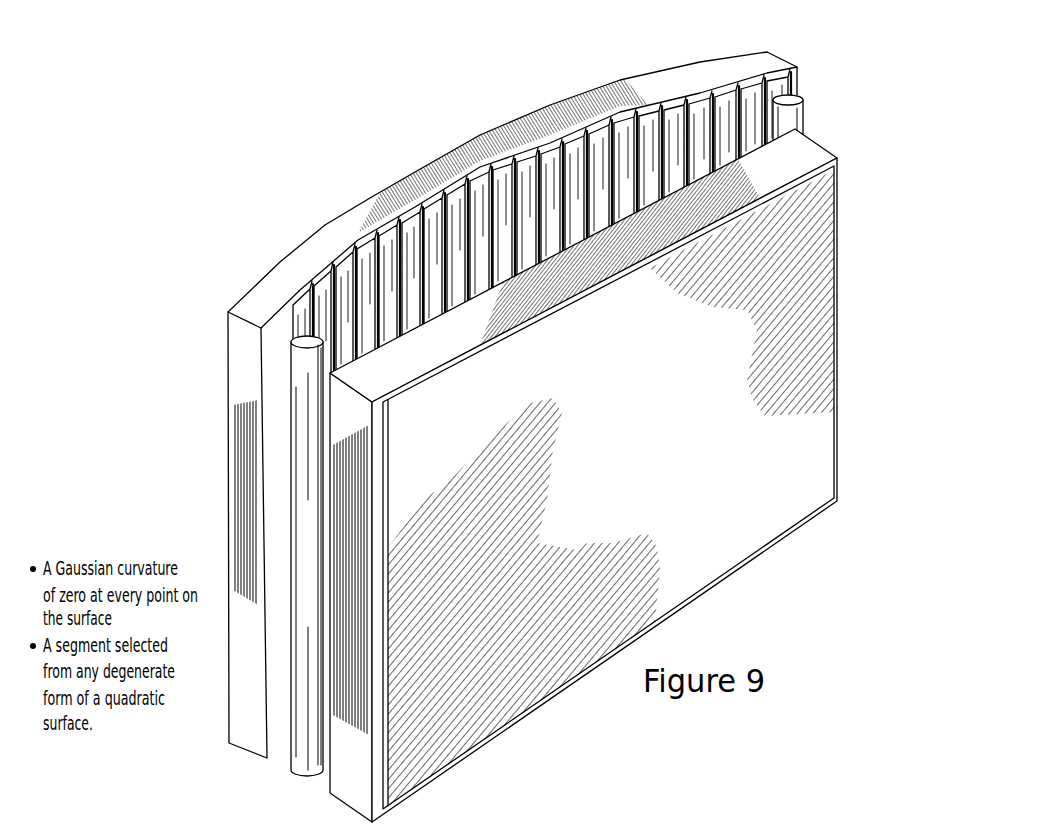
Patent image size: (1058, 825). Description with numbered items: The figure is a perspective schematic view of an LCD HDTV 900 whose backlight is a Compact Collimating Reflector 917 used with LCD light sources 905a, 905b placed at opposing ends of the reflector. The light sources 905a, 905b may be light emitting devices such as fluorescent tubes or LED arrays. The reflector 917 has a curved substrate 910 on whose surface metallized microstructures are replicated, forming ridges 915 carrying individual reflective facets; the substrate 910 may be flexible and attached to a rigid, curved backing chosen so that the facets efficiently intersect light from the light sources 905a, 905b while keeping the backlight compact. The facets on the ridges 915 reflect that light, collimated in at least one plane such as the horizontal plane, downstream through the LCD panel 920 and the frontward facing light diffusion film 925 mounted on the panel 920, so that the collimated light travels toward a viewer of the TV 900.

The LCD HDTV 900 is at (405, 90).
The LCD light source 905a is at (300, 754).
The LCD light source 905b is at (812, 96).
The substrate 910 is at (355, 204).
The ridges 915 is at (302, 298).
The compact collimating reflector 917 is at (219, 535).
The LCD panel 920 is at (591, 457).
The light diffusion film 925 is at (790, 498).